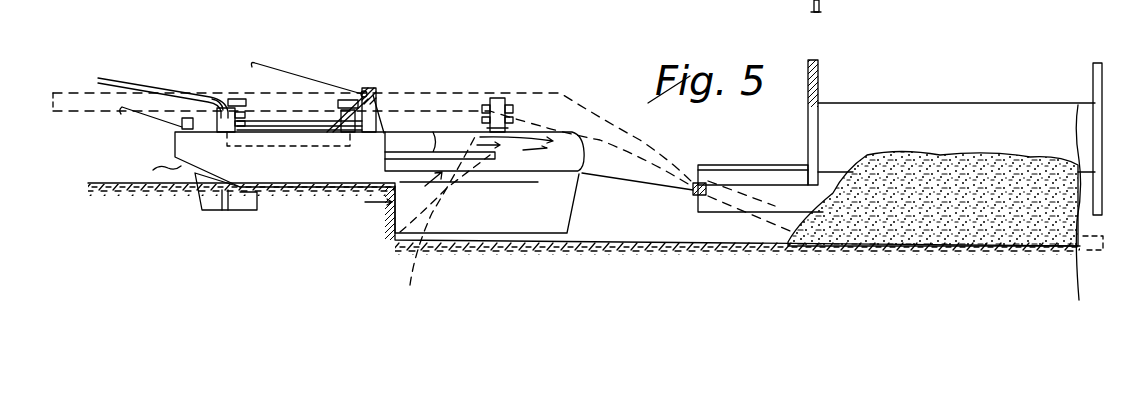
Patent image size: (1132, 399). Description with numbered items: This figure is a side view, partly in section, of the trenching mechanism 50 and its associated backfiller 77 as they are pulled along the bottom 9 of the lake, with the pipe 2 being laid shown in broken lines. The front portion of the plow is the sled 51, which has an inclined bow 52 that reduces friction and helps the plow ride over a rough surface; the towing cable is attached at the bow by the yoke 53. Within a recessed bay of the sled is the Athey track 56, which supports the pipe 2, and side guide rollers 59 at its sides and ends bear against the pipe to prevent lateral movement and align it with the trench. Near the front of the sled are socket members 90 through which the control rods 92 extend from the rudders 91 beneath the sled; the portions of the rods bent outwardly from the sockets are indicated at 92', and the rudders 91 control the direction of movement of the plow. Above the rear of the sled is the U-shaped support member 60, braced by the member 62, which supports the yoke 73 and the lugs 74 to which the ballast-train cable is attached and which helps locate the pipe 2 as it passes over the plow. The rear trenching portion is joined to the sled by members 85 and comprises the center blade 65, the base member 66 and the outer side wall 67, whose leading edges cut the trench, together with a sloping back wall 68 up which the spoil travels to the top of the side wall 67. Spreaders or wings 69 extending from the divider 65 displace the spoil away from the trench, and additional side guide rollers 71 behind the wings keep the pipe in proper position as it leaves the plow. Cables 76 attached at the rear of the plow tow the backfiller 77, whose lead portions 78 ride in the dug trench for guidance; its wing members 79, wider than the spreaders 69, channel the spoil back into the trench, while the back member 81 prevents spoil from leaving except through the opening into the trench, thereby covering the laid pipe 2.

The pipe 2 is at (73, 100).
The bottom of the lake 9 is at (97, 182).
The trenching mechanism 50 is at (399, 92).
The sled 51 is at (287, 173).
The inclined bow 52 is at (154, 168).
The yoke 53 is at (120, 113).
The Athey track 56 is at (283, 122).
The side guide rollers 59 is at (233, 97).
The U-shaped support member 60 is at (368, 90).
The brace member 62 is at (334, 125).
The center blade 65 is at (417, 143).
The base member 66 is at (482, 238).
The outer side wall 67 is at (528, 212).
The sloping back wall 68 is at (442, 218).
The wings or spreaders 69 is at (576, 162).
The side guide rollers 71 is at (498, 98).
The yoke 73 is at (291, 72).
The lugs 74 is at (367, 84).
The cables 76 is at (635, 190).
The backfiller 77 is at (990, 101).
The lead portions 78 is at (733, 168).
The wing members 79 is at (882, 130).
The back member 81 is at (1103, 90).
The connecting members 85 is at (398, 177).
The socket members 90 is at (207, 110).
The rudders 91 is at (210, 197).
The control rods 92 is at (213, 233).
The outwardly extending portion of control rods 92' is at (163, 65).